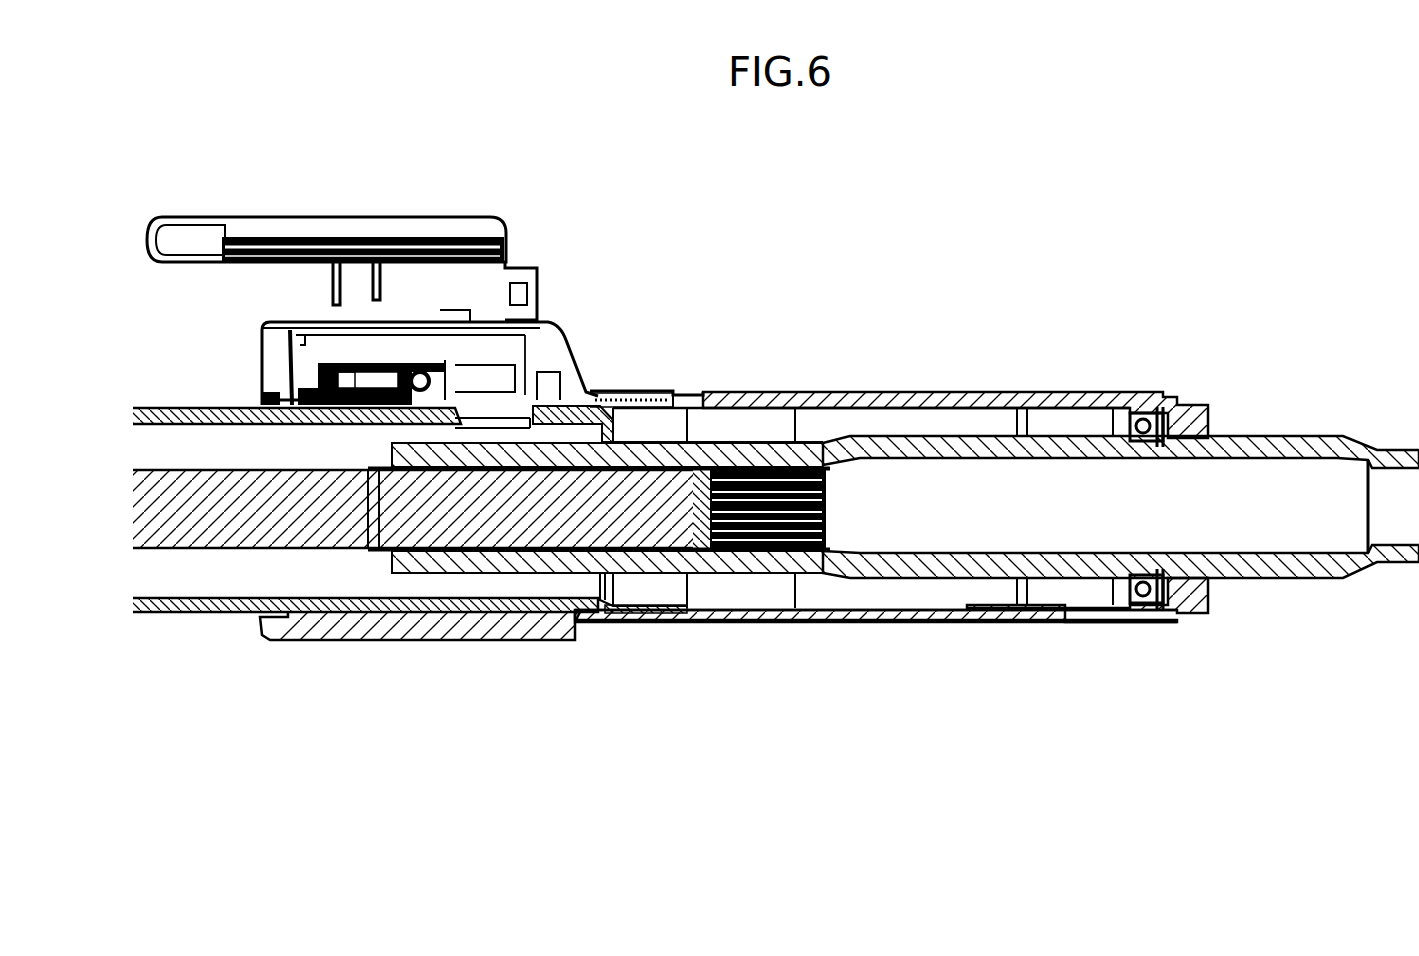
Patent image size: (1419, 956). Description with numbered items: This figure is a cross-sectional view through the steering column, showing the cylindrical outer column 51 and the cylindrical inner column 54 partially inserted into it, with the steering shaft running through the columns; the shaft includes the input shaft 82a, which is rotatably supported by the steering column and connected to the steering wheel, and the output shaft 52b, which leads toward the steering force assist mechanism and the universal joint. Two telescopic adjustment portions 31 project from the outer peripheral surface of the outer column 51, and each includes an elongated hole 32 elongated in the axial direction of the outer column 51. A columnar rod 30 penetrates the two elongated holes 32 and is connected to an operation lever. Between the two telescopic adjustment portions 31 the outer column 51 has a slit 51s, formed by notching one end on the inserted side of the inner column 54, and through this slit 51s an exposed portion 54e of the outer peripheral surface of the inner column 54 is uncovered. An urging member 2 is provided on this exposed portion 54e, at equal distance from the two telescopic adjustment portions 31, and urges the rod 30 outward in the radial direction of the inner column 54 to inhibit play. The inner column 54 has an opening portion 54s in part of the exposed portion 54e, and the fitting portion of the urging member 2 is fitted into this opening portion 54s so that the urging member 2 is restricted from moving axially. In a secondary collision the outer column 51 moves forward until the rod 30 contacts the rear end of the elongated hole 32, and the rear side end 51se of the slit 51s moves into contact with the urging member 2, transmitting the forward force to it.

The output shaft 52b is at (243, 236).
The telescopic adjustment portion 31 is at (303, 335).
The elongated hole 32 is at (348, 380).
The rod 30 is at (420, 374).
The opening portion 54s is at (456, 418).
The urging member 2 is at (538, 370).
The exposed portion 54e is at (590, 398).
The slit 51s is at (634, 398).
The rear side end of the slit 51se is at (698, 390).
The outer column 51 is at (1116, 398).
The input shaft 82a is at (1403, 455).
The inner column 54 is at (216, 604).